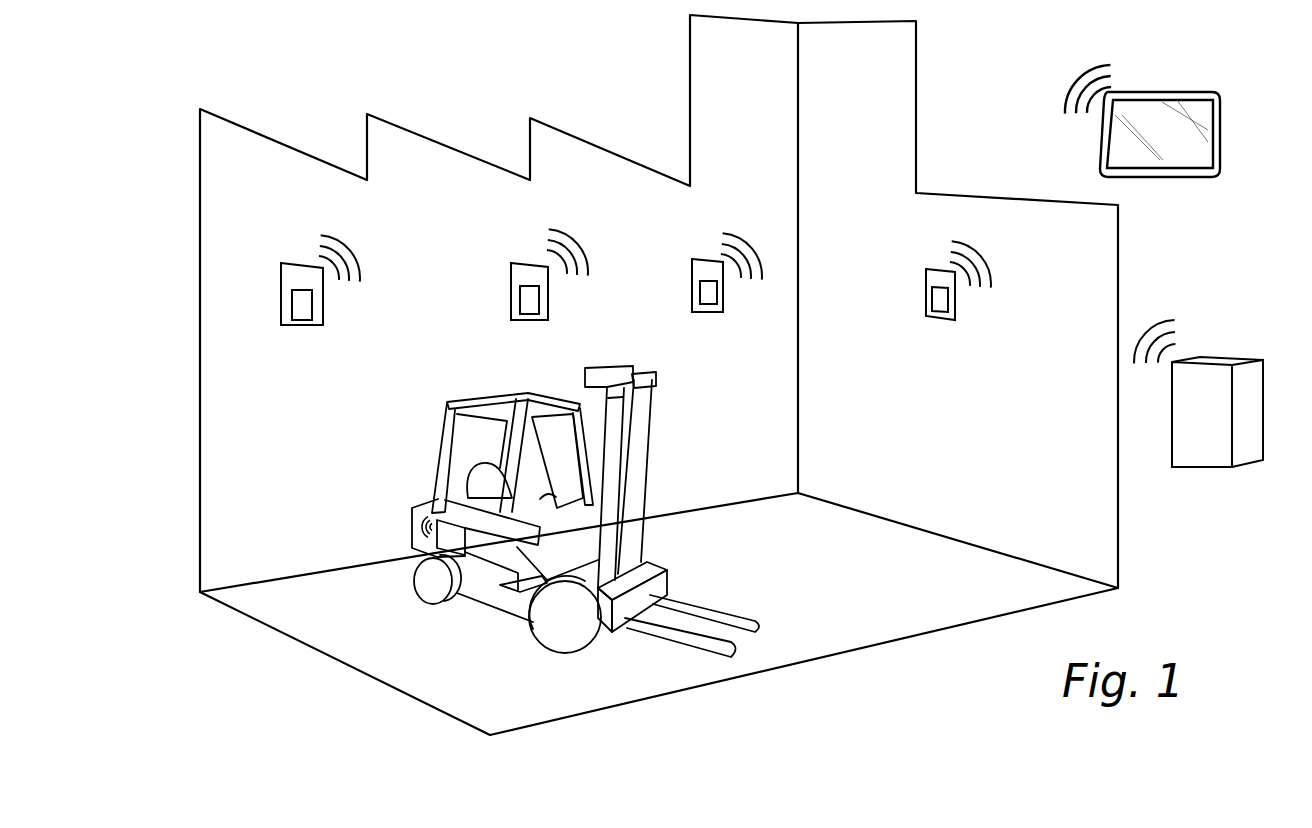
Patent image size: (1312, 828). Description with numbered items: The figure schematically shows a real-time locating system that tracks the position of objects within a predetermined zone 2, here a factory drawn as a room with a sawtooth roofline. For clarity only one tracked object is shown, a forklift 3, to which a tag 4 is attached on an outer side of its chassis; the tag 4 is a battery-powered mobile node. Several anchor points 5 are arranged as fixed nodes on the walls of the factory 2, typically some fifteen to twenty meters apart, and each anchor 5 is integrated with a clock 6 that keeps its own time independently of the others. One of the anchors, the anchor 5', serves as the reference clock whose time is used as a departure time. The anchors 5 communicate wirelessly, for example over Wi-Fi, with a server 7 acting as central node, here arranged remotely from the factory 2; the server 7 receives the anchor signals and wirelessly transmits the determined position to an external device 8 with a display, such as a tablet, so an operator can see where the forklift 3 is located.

The predetermined zone 2 is at (200, 356).
The forklift 3 is at (477, 400).
The tag 4 is at (412, 547).
The anchor point 5 is at (293, 275).
The reference clock anchor 5' is at (522, 271).
The clock 6 is at (312, 310).
The server 7 is at (1190, 467).
The external device 8 is at (1221, 127).